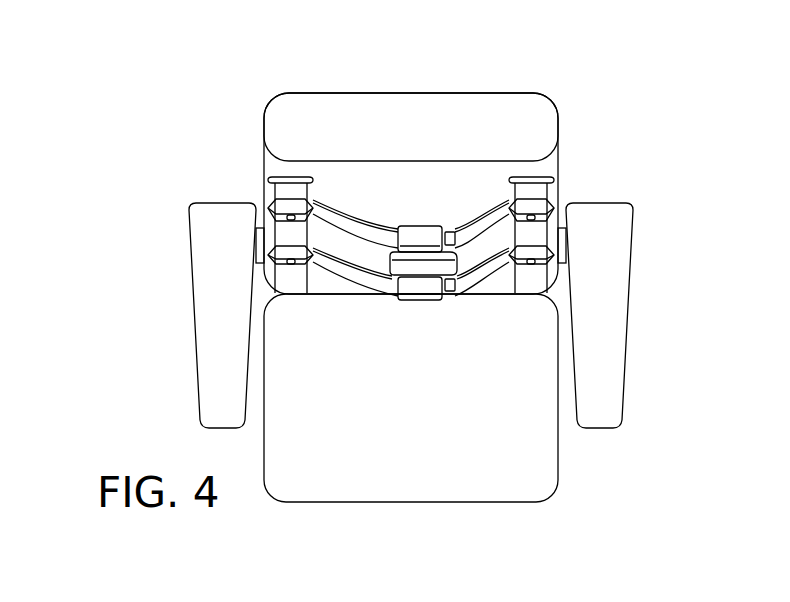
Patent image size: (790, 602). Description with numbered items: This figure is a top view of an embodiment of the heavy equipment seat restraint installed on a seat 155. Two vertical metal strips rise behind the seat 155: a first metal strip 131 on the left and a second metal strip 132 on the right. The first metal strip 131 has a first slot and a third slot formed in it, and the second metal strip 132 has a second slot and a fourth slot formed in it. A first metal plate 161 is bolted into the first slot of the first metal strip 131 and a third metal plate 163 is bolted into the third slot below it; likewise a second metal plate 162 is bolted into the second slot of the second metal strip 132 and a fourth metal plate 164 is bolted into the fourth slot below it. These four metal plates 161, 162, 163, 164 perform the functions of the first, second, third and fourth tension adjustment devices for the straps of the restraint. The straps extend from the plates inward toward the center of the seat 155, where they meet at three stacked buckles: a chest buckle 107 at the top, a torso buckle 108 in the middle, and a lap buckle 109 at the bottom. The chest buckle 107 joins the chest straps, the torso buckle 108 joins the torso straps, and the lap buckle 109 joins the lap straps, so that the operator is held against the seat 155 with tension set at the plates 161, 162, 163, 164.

The chest buckle 107 is at (416, 247).
The torso buckle 108 is at (398, 265).
The lap buckle 109 is at (418, 293).
The first metal strip 131 is at (298, 191).
The second metal strip 132 is at (541, 186).
The seat 155 is at (436, 108).
The first metal plate 161 is at (288, 208).
The second metal plate 162 is at (521, 200).
The third metal plate 163 is at (298, 264).
The fourth metal plate 164 is at (519, 262).